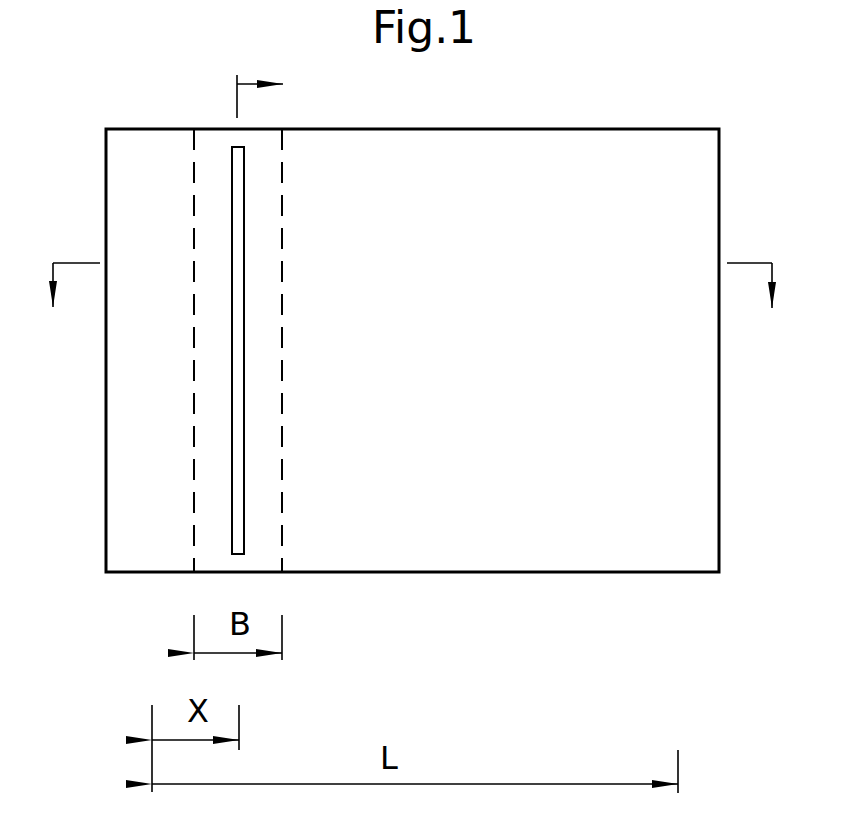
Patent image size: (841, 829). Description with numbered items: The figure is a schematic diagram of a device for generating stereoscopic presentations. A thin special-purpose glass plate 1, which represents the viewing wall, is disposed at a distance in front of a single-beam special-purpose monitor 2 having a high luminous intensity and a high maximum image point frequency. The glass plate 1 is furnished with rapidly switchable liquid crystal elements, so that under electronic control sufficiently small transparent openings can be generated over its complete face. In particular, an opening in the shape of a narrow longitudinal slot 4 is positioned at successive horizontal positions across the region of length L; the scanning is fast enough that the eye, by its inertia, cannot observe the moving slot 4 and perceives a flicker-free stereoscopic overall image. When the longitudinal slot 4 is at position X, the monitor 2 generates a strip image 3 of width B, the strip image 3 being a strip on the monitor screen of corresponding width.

The special-purpose glass plate 1 is at (659, 574).
The single-beam special-purpose monitor 2 is at (410, 217).
The strip image 3 is at (263, 359).
The longitudinal slot 4 is at (240, 492).